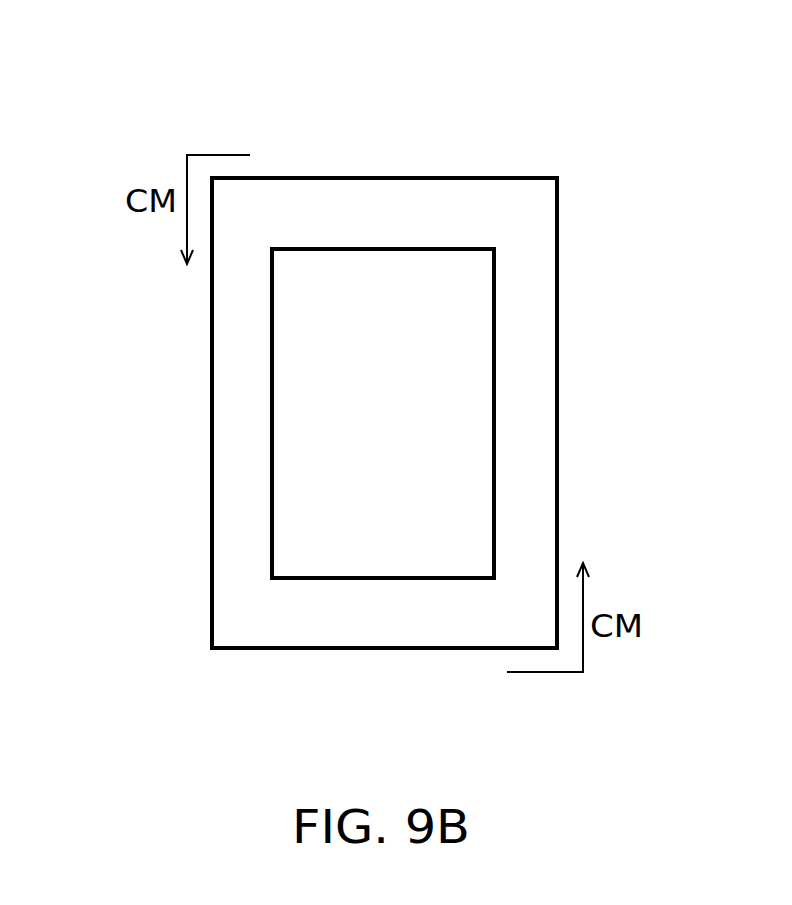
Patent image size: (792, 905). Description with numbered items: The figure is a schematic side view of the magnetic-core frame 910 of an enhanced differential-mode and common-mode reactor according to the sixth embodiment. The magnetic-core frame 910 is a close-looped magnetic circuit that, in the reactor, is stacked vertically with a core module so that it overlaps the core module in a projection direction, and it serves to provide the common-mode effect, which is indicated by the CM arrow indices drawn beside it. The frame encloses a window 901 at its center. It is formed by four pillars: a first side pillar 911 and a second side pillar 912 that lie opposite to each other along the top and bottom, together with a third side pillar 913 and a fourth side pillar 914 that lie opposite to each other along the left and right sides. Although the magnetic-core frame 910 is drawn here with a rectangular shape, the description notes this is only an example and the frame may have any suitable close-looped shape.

The magnetic-core frame 910 is at (298, 176).
The first side pillar 911 is at (388, 207).
The second side pillar 912 is at (390, 628).
The third side pillar 913 is at (230, 413).
The fourth side pillar 914 is at (533, 413).
The window 901 is at (318, 510).